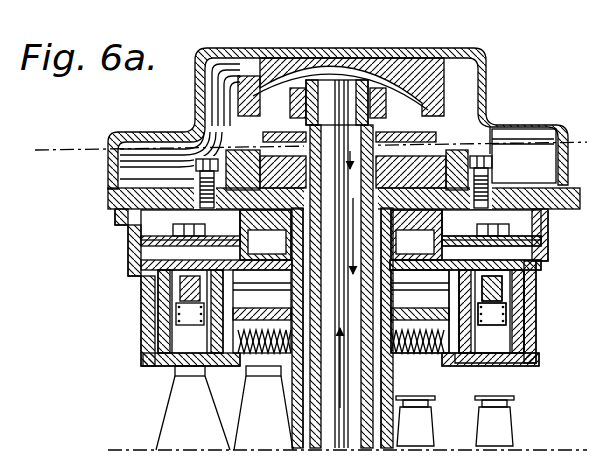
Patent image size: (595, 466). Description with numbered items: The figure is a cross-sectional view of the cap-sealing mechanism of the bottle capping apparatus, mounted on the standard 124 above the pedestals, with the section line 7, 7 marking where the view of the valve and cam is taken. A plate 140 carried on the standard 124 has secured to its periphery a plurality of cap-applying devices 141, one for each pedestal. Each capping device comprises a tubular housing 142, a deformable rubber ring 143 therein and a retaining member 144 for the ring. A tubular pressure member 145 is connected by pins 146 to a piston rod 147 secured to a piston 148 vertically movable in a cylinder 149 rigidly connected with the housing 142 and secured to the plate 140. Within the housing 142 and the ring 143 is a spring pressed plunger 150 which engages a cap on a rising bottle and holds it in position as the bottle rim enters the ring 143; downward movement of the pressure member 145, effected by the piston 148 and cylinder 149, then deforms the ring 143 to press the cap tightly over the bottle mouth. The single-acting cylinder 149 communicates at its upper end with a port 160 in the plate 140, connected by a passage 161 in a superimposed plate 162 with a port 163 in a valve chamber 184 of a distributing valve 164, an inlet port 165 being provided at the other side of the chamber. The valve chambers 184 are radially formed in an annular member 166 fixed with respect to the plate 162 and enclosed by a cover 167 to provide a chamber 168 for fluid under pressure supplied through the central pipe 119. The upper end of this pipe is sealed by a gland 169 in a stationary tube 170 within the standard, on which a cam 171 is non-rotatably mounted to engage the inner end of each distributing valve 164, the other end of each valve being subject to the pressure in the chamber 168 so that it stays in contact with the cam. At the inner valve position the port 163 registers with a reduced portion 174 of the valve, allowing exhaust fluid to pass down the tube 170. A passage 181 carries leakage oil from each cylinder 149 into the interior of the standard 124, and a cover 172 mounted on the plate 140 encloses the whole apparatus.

The section line 7- 7 is at (53, 158).
The central pipe 119 is at (330, 396).
The standard 124 is at (283, 430).
The plate 140 is at (438, 122).
The cap-applying device 141 is at (140, 304).
The tubular housing 142 is at (450, 357).
The deformable rubber ring 143 is at (515, 338).
The retaining member 144 is at (508, 353).
The tubular pressure member 145 is at (525, 300).
The pins 146 is at (530, 280).
The piston rod 147 is at (528, 258).
The piston 148 is at (525, 235).
The cylinder 149 is at (541, 205).
The spring pressed plunger 150 is at (508, 354).
The port 160 is at (483, 167).
The passage 161 is at (470, 144).
The superimposed plate 162 is at (188, 173).
The port 163 is at (416, 235).
The distributing valve 164 is at (425, 122).
The inlet port 165 is at (463, 110).
The annular member 166 is at (439, 76).
The cover 167 is at (272, 97).
The chamber 168 is at (265, 122).
The gland 169 is at (322, 62).
The stationary tube 170 is at (345, 72).
The cam 171 is at (265, 235).
The cover 172 is at (548, 170).
The reduced portion 174 is at (383, 140).
The passage 181 is at (420, 311).
The valve chamber 184 is at (440, 132).